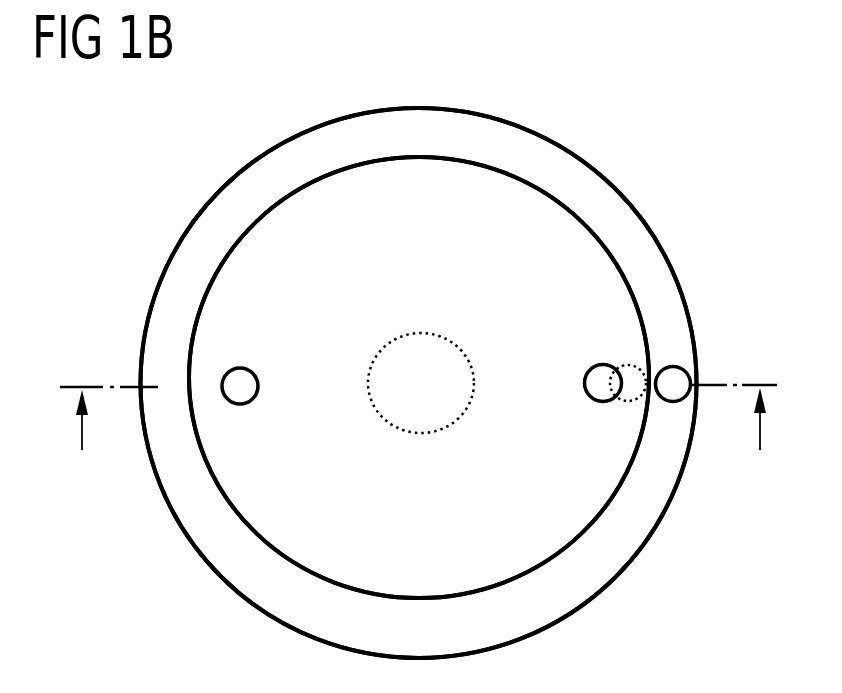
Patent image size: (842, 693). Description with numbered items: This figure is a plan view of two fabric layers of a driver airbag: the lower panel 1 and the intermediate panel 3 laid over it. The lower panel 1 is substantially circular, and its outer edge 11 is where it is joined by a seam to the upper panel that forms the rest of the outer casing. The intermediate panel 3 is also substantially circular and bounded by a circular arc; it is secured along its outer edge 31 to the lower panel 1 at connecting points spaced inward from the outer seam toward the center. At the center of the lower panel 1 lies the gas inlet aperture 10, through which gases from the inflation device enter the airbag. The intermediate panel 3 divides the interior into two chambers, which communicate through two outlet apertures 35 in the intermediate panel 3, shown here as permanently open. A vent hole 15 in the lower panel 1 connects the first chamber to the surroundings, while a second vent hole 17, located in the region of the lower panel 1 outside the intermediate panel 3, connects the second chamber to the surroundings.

The lower panel 1 is at (580, 143).
The intermediate panel 3 is at (433, 140).
The gas inlet aperture 10 is at (445, 360).
The outer edge 11 is at (632, 203).
The vent hole 15 is at (635, 363).
The vent hole 17 is at (677, 382).
The outer edge 31 is at (332, 168).
The outlet apertures 35 is at (237, 395).